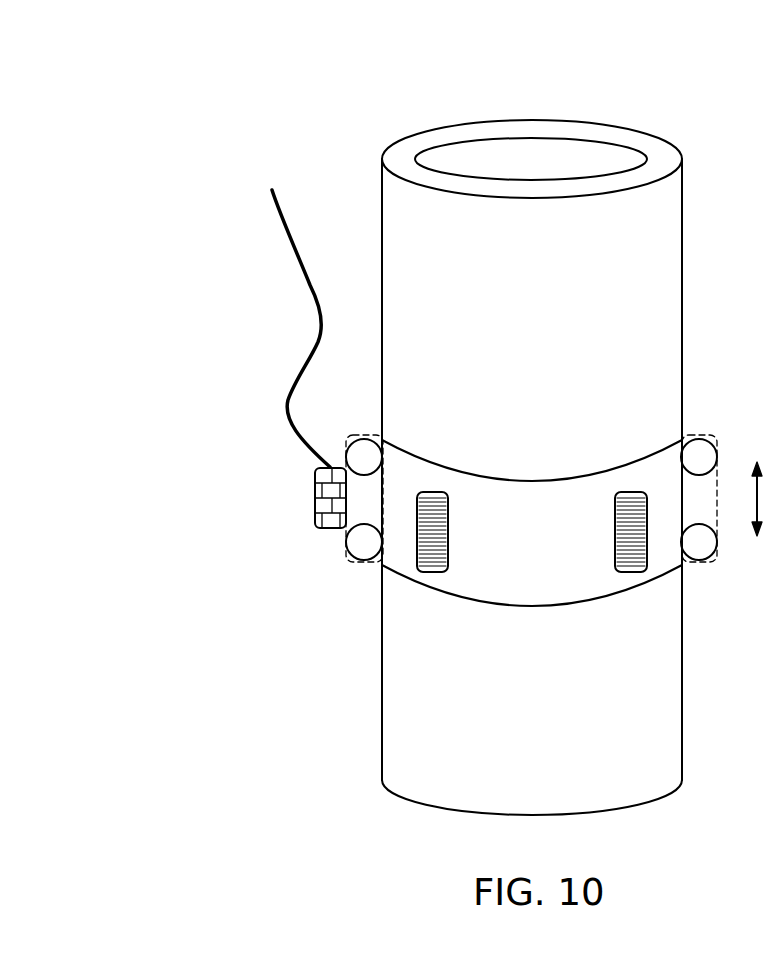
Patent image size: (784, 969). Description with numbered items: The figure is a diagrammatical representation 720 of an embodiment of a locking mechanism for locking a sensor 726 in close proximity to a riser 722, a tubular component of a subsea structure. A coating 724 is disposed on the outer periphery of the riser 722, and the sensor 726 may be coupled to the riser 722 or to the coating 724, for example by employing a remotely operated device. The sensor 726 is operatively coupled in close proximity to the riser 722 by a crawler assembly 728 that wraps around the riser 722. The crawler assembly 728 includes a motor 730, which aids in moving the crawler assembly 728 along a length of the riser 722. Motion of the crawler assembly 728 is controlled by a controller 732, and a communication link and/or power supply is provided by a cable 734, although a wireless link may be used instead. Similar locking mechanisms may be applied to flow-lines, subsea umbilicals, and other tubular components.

The diagrammatical representation 720 is at (343, 53).
The riser 722 is at (530, 152).
The coating 724 is at (660, 155).
The sensor 726 is at (615, 538).
The crawler assembly 728 is at (521, 478).
The motor 730 is at (703, 547).
The controller 732 is at (315, 497).
The cable 734 is at (303, 357).